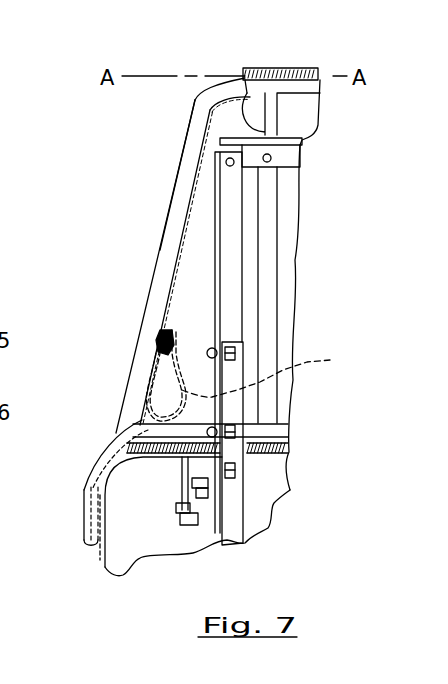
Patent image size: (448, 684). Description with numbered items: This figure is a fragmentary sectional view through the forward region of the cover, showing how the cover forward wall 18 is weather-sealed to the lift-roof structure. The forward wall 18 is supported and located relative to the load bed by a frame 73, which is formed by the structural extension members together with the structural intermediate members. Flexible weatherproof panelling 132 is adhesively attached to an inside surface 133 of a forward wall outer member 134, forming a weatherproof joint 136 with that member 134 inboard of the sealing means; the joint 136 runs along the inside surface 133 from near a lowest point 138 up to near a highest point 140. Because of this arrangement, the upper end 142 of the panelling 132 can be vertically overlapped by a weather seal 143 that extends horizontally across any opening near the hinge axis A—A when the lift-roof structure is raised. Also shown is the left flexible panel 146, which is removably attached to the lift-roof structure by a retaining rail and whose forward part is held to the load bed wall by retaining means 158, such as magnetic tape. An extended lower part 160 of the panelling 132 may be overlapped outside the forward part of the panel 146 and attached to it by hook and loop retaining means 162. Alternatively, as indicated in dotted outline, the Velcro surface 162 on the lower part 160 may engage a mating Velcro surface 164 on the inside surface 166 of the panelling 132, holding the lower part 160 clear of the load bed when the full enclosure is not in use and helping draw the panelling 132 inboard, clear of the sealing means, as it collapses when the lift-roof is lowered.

The cover forward wall 18 is at (268, 207).
The frame 73 is at (243, 492).
The flexible weatherproof panelling 132 is at (245, 290).
The inside surface 133 is at (198, 160).
The forward wall outer member 134 is at (165, 216).
The weatherproof joint 136 is at (181, 243).
The lowest point 138 is at (138, 417).
The highest point 140 is at (205, 88).
The upper end 142 is at (278, 124).
The weather seal 143 is at (254, 68).
The left flexible panel 146 is at (83, 518).
The retaining means 158 is at (85, 533).
The extended lower part 160 is at (58, 438).
The hook and loop retaining means 162 is at (88, 500).
The mating Velcro surface 164 is at (155, 343).
The inside surface 166 is at (205, 247).